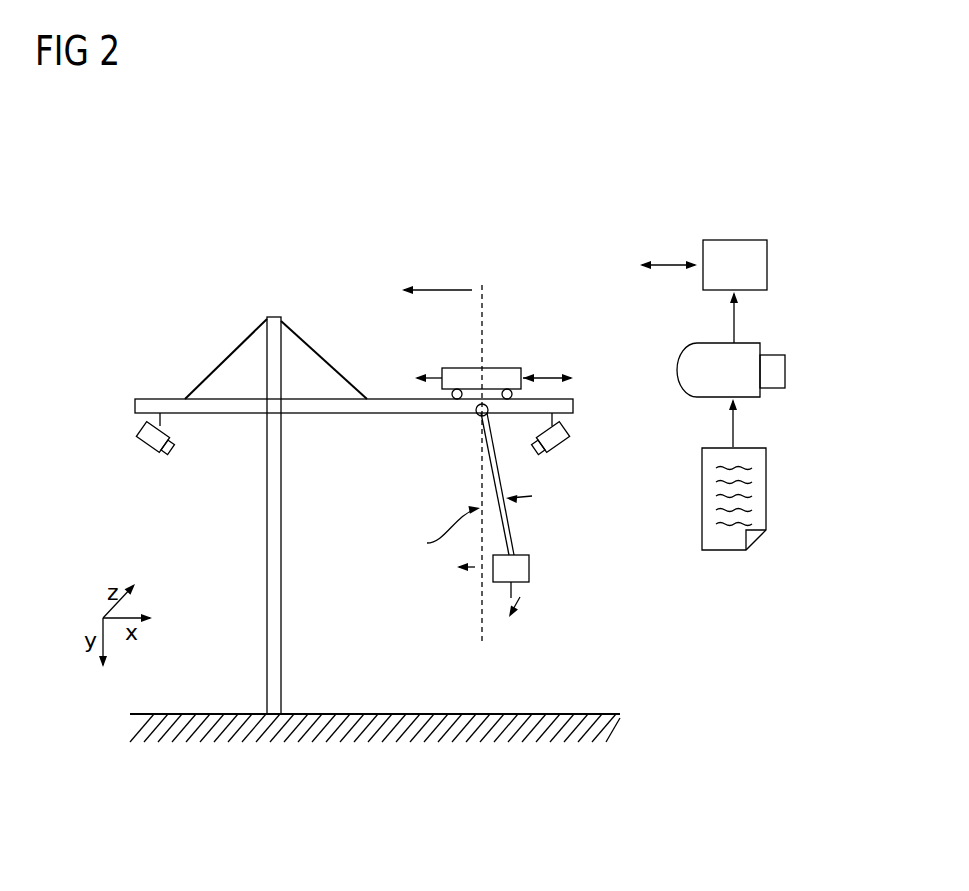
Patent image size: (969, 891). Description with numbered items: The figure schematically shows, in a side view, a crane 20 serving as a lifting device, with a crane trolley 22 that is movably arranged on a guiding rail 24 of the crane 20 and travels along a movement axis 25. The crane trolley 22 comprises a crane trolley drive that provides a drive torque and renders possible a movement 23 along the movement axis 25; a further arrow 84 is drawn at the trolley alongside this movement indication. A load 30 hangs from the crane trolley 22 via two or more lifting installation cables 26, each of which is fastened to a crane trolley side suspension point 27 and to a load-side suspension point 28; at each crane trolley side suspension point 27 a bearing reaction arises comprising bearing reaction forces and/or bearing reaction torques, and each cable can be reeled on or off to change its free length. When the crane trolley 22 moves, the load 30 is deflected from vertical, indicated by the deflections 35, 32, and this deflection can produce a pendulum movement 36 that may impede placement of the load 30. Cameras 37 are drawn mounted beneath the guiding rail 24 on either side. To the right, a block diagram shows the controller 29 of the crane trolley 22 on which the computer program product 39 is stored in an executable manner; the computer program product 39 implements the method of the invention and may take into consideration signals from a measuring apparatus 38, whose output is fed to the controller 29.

The crane 20 is at (199, 336).
The crane trolley 22 is at (486, 368).
The movement 23 is at (430, 290).
The guiding rail 24 is at (375, 399).
The movement axis 25 is at (545, 376).
The lifting installation cables 26 is at (500, 466).
The crane trolley side suspension points 27 is at (477, 414).
The load-side suspension points 28 is at (513, 555).
The controller 29 is at (768, 263).
The load 30 is at (530, 570).
The deflection 32 is at (521, 603).
The deflection 35 is at (468, 570).
The pendulum movement 36 is at (438, 531).
The camera 37 is at (152, 452).
The measuring apparatus 38 is at (786, 368).
The computer program product 39 is at (767, 496).
The trolley movement direction 84 is at (432, 376).